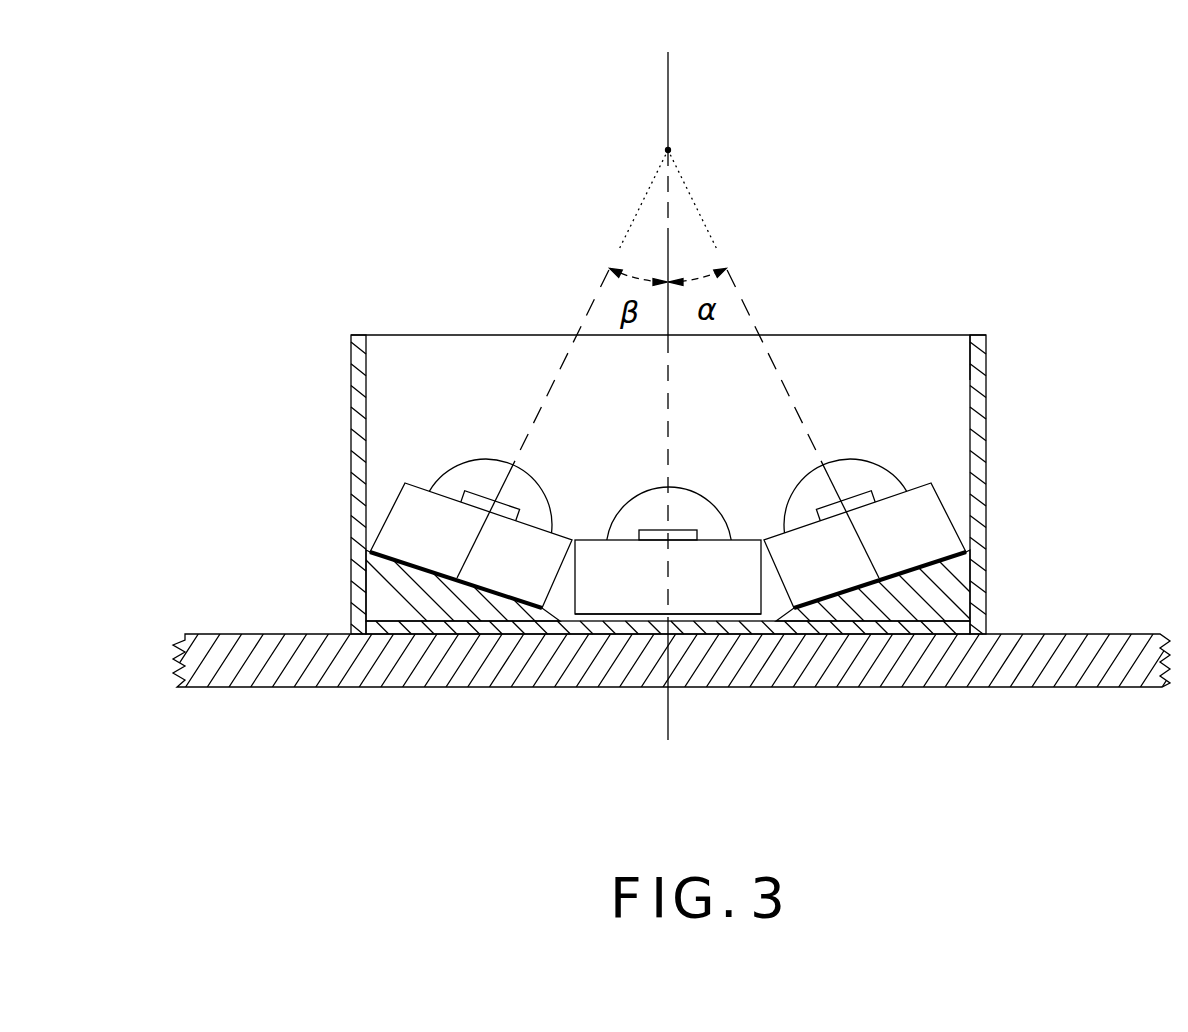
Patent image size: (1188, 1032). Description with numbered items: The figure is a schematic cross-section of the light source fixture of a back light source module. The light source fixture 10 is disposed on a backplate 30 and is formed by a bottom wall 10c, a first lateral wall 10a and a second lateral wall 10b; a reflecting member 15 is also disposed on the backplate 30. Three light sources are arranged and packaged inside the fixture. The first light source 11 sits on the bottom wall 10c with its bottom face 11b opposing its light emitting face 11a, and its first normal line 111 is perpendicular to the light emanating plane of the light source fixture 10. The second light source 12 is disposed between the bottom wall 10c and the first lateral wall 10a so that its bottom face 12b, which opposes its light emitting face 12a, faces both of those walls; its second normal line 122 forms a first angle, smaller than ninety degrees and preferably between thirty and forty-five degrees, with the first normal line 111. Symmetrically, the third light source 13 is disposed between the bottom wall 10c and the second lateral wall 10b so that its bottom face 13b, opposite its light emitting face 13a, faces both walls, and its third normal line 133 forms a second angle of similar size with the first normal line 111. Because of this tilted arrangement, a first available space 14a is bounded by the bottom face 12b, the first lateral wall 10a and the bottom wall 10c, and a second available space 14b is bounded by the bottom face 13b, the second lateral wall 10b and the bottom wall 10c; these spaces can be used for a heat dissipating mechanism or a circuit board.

The light source fixture 10 is at (930, 225).
The first lateral wall 10a is at (982, 371).
The second lateral wall 10b is at (350, 378).
The bottom wall 10c is at (398, 625).
The first light source 11 is at (740, 617).
The light emitting face of the first light source 11a is at (743, 537).
The bottom face of the first light source 11b is at (733, 603).
The first normal line 111 is at (665, 723).
The second light source 12 is at (922, 525).
The light emitting face of the second light source 12a is at (922, 478).
The bottom face of the second light source 12b is at (845, 593).
The second normal line 122 is at (748, 300).
The third light source 13 is at (422, 522).
The light emitting face of the third light source 13a is at (422, 477).
The bottom face of the third light source 13b is at (493, 593).
The third normal line 133 is at (595, 300).
The first available space 14a is at (950, 592).
The second available space 14b is at (390, 590).
The reflecting member 15 is at (970, 363).
The backplate 30 is at (262, 687).